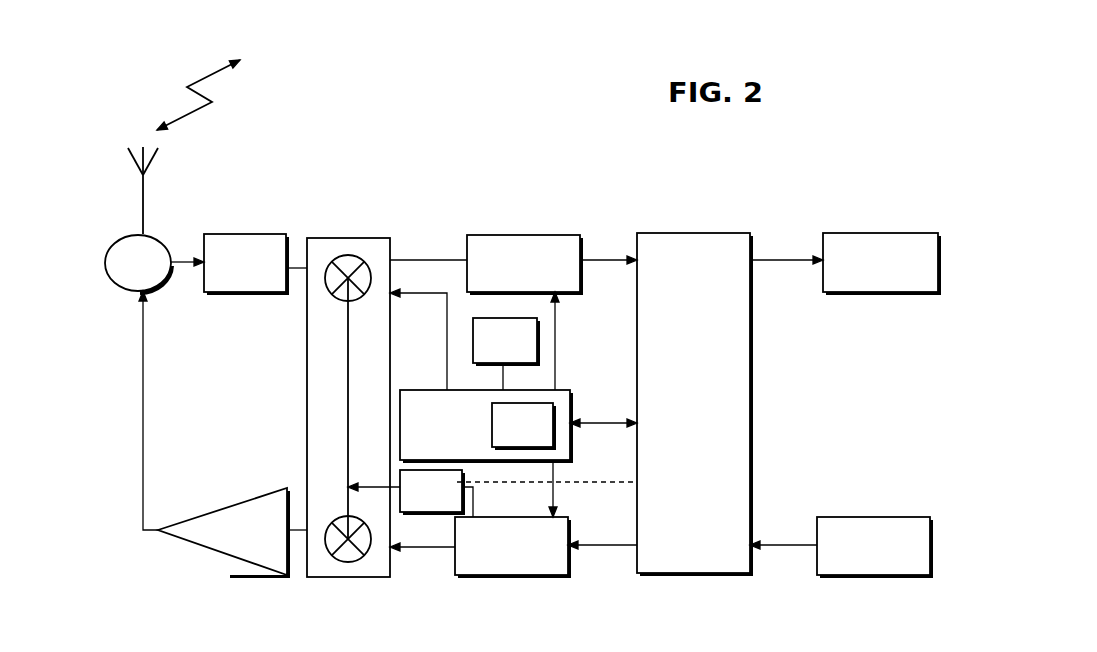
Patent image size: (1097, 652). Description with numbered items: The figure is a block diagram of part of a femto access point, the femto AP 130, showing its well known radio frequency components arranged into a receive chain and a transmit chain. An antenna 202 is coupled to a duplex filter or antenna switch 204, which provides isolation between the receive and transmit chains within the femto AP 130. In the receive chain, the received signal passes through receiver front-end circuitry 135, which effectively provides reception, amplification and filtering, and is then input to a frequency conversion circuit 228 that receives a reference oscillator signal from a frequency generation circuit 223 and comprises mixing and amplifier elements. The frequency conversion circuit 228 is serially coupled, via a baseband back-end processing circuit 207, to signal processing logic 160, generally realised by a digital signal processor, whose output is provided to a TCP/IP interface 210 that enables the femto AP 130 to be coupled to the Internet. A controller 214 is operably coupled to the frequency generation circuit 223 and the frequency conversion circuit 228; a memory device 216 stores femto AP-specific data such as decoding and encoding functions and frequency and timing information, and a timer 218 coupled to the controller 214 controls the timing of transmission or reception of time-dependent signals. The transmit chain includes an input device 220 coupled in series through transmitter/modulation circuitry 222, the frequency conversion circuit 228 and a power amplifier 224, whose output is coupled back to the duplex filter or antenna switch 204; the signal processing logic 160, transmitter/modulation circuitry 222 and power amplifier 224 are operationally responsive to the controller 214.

The femto access point 130 is at (453, 120).
The antenna 202 is at (143, 203).
The duplex filter or antenna switch 204 is at (118, 273).
The receiver front-end circuitry 135 is at (225, 273).
The frequency conversion circuit 228 is at (328, 423).
The baseband processing circuit 207 is at (502, 276).
The signal processing logic 160 is at (673, 271).
The TCP/IP interface 210 is at (861, 271).
The timer 218 is at (484, 351).
The controller 214 is at (422, 433).
The memory device 216 is at (501, 433).
The frequency generation circuit 223 is at (412, 502).
The transmitter/modulation circuitry 222 is at (492, 556).
The input device 220 is at (854, 556).
The power amplifier 224 is at (226, 541).